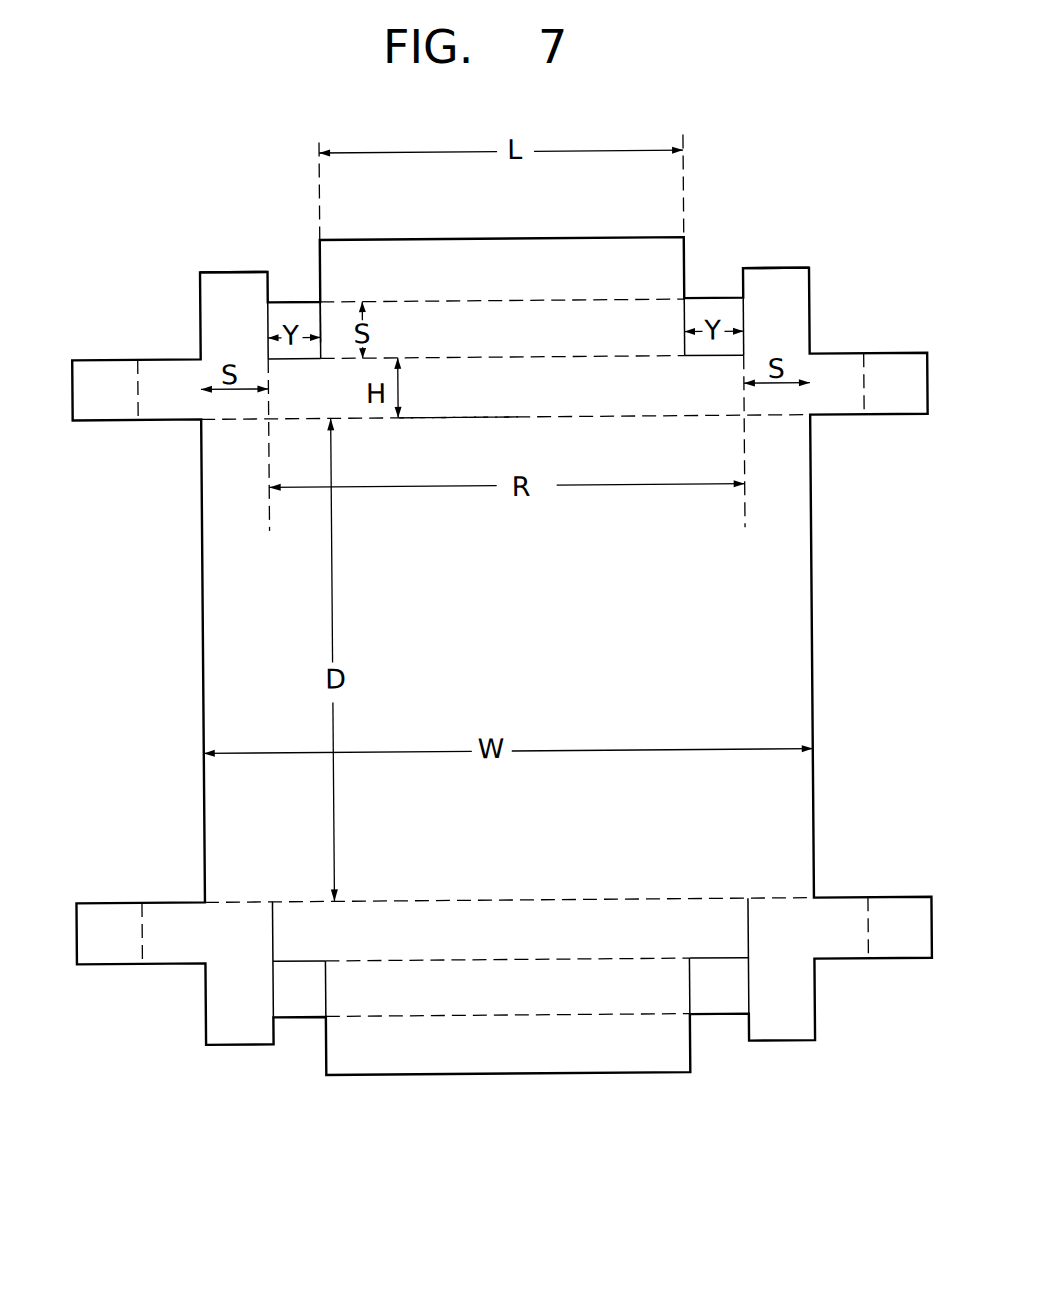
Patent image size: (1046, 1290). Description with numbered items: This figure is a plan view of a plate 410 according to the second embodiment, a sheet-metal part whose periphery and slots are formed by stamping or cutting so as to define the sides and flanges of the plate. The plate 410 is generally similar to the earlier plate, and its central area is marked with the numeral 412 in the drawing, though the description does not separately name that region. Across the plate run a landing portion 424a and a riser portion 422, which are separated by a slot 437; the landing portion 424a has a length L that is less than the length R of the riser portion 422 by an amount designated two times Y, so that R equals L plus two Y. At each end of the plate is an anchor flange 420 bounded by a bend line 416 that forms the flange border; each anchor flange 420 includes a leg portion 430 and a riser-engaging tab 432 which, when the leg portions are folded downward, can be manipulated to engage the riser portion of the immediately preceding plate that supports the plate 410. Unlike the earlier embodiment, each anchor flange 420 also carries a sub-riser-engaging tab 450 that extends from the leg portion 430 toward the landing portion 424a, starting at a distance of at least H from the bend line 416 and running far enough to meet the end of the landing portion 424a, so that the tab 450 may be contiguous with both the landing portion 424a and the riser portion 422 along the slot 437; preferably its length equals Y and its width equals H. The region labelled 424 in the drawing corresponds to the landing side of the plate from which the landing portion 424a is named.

The plate 410 is at (593, 212).
The base body 412 is at (560, 600).
The bend line 416 is at (495, 414).
The anchor flange 420 is at (222, 176).
The riser portion 422 is at (515, 403).
The upper block 424 is at (648, 238).
The landing portion 424a is at (547, 346).
The leg portion 430 is at (216, 308).
The riser-engaging tab 432 is at (120, 355).
The slot 437 is at (320, 317).
The sub-riser-engaging tab 450 is at (291, 298).